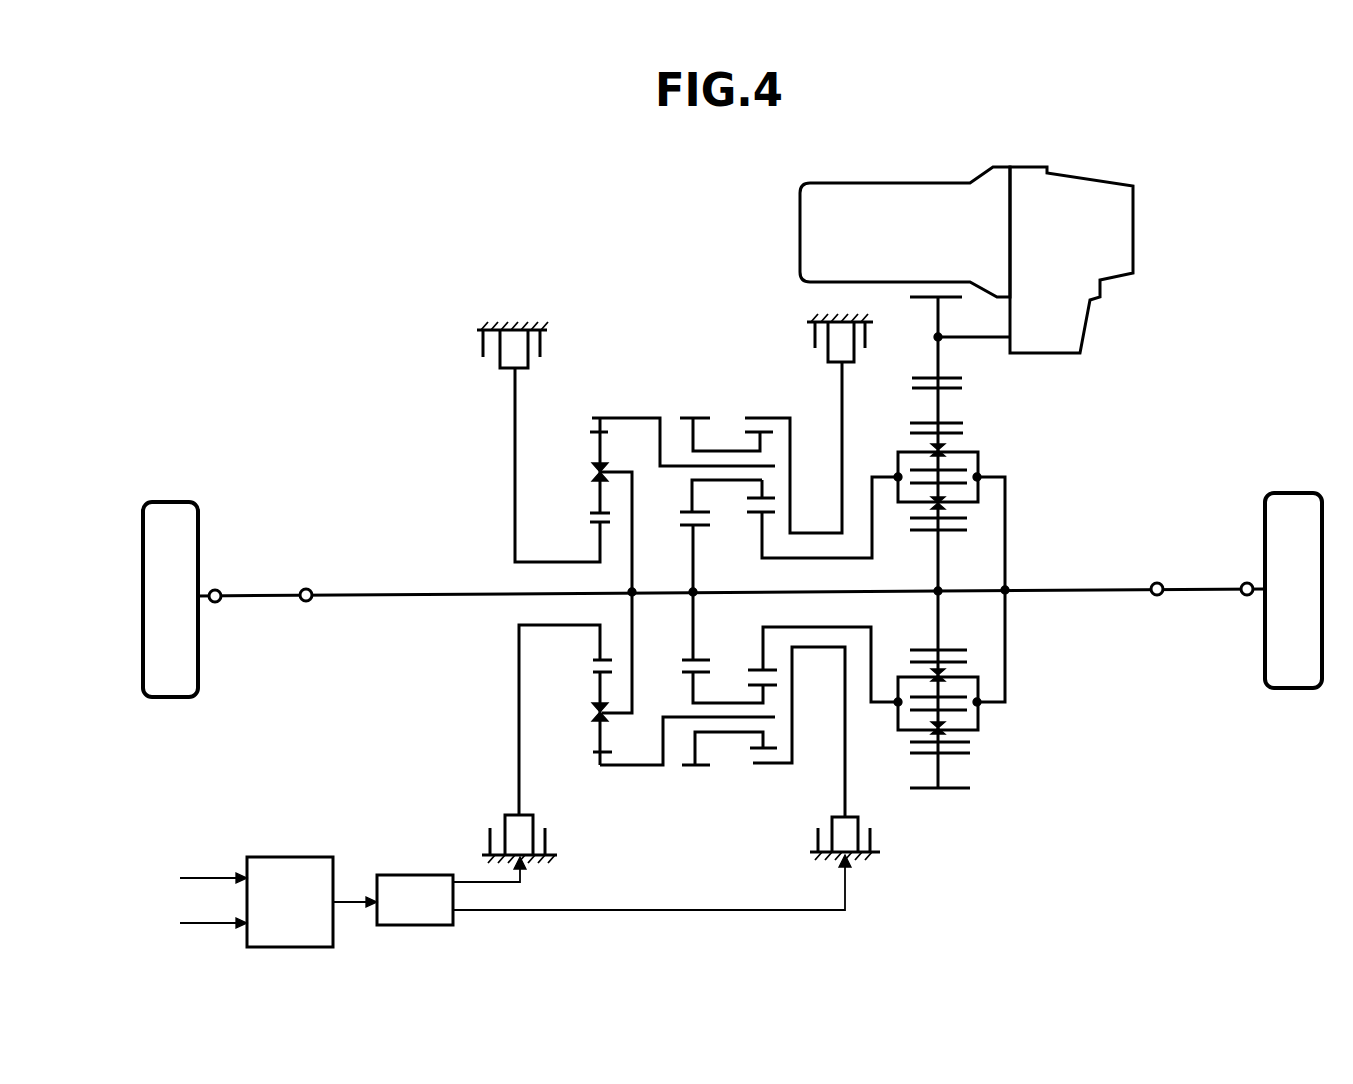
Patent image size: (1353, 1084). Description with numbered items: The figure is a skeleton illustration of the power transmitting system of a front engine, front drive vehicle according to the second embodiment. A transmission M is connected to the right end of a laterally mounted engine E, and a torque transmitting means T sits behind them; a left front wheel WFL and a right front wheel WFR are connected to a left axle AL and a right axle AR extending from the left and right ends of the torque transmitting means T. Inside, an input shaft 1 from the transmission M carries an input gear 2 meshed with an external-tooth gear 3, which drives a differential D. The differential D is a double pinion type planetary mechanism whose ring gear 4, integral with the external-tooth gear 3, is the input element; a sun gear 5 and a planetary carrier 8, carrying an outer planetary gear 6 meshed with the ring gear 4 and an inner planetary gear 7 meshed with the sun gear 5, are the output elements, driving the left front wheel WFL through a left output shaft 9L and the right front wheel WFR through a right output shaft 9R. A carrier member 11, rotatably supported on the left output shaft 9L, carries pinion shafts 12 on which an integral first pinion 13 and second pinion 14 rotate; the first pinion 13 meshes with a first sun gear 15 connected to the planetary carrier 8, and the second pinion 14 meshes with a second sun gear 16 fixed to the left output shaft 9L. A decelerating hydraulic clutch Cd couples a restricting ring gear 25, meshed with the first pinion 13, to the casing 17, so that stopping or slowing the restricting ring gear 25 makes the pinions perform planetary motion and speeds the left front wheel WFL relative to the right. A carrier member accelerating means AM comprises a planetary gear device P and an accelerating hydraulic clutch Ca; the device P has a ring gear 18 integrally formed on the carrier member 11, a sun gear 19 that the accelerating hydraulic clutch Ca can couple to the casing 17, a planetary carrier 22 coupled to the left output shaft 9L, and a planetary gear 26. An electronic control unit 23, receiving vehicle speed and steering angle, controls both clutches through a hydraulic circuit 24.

The input shaft 1 is at (987, 336).
The input gear 2 is at (930, 302).
The external-tooth gear 3 is at (915, 378).
The ring gear 4 is at (914, 420).
The sun gear 5 is at (957, 532).
The outer planetary gear 6 is at (914, 433).
The inner planetary gear 7 is at (914, 519).
The planetary carrier 8 is at (860, 490).
The left output shaft 9L is at (756, 588).
The right output shaft 9R is at (1072, 586).
The carrier member 11 is at (663, 733).
The pinion shafts 12 is at (775, 464).
The first pinion 13 is at (745, 430).
The second pinion 14 is at (695, 415).
The first sun gear 15 is at (775, 508).
The second sun gear 16 is at (698, 658).
The casing 17 is at (512, 325).
The ring gear 18 is at (594, 418).
The sun gear 19 is at (592, 530).
The planetary carrier 22 is at (635, 503).
The electronic control unit 23 is at (256, 898).
The hydraulic circuit 24 is at (592, 890).
The restricting ring gear 25 is at (762, 416).
The planetary gear 26 is at (590, 430).
The engine E is at (898, 188).
The transmission M is at (1074, 190).
The differential D is at (1018, 445).
The torque transmitting means T is at (691, 292).
The decelerating hydraulic clutch Cd is at (803, 310).
The carrier member accelerating means AM is at (622, 278).
The accelerating hydraulic clutch Ca is at (536, 313).
The planetary gear device P is at (606, 382).
The left axle AL is at (254, 592).
The right axle AR is at (1189, 586).
The left front wheel WFL is at (172, 516).
The right front wheel WFR is at (1288, 505).